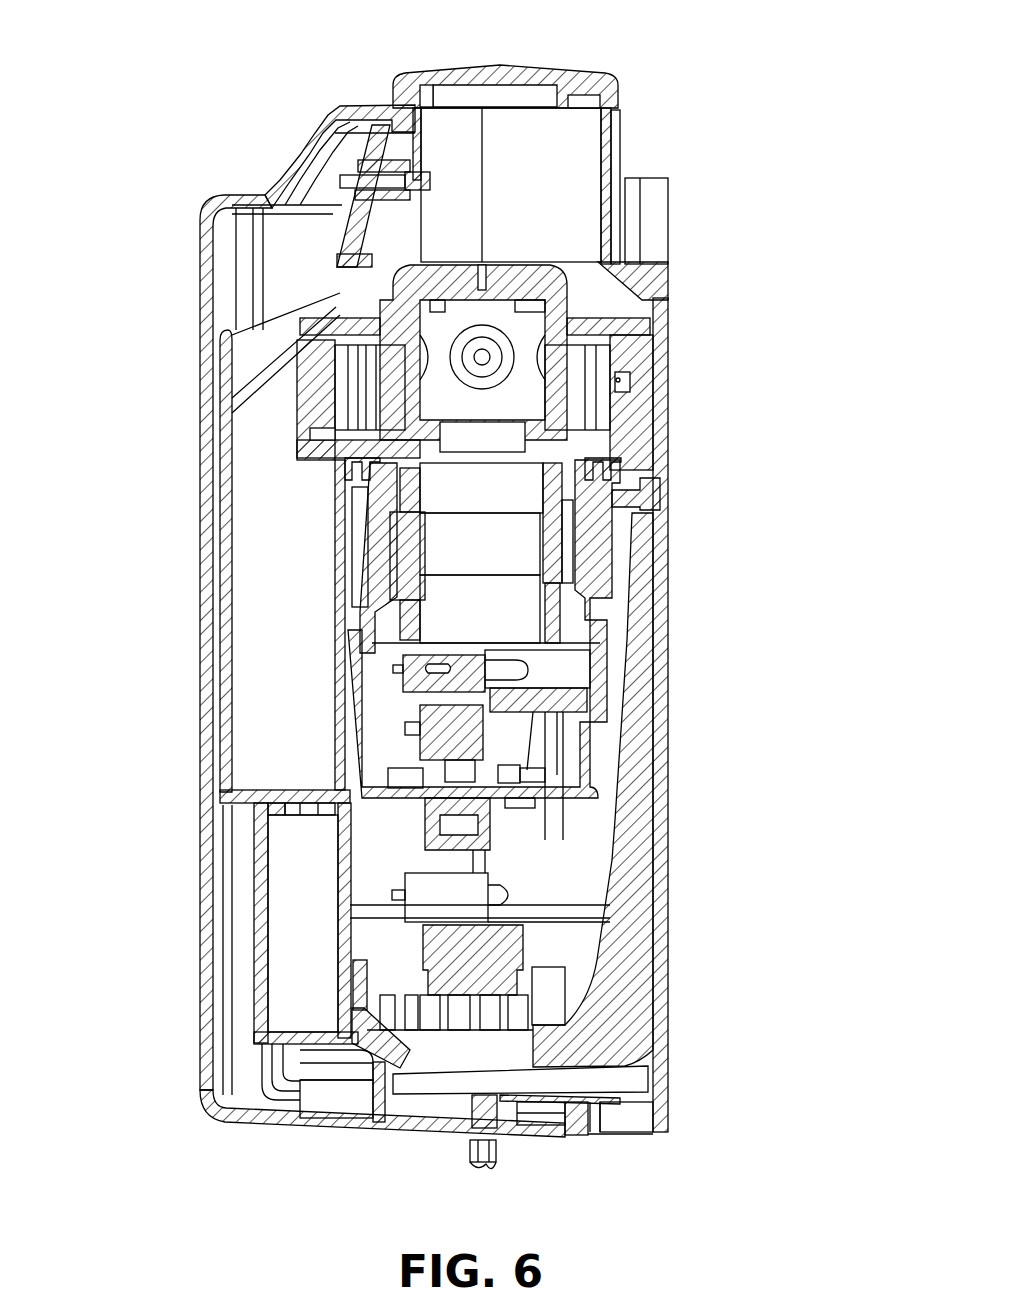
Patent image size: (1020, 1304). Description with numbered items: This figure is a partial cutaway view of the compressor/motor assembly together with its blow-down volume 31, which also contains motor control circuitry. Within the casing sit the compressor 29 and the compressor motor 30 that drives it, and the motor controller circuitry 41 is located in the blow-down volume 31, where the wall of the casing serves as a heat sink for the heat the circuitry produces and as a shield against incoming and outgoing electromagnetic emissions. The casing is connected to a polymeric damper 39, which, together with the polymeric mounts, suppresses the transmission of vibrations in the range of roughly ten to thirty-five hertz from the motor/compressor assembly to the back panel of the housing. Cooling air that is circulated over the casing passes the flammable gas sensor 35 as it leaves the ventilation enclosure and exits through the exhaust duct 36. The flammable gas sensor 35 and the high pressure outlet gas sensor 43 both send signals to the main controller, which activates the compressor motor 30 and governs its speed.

The compressor 29 is at (517, 384).
The compressor motor 30 is at (604, 478).
The blow-down volume 31 is at (570, 668).
The flammable gas sensor 35 is at (428, 178).
The exhaust duct 36 is at (522, 95).
The polymeric damper 39 is at (668, 503).
The motor controller circuitry 41 is at (612, 698).
The high pressure outlet gas sensor 43 is at (500, 667).